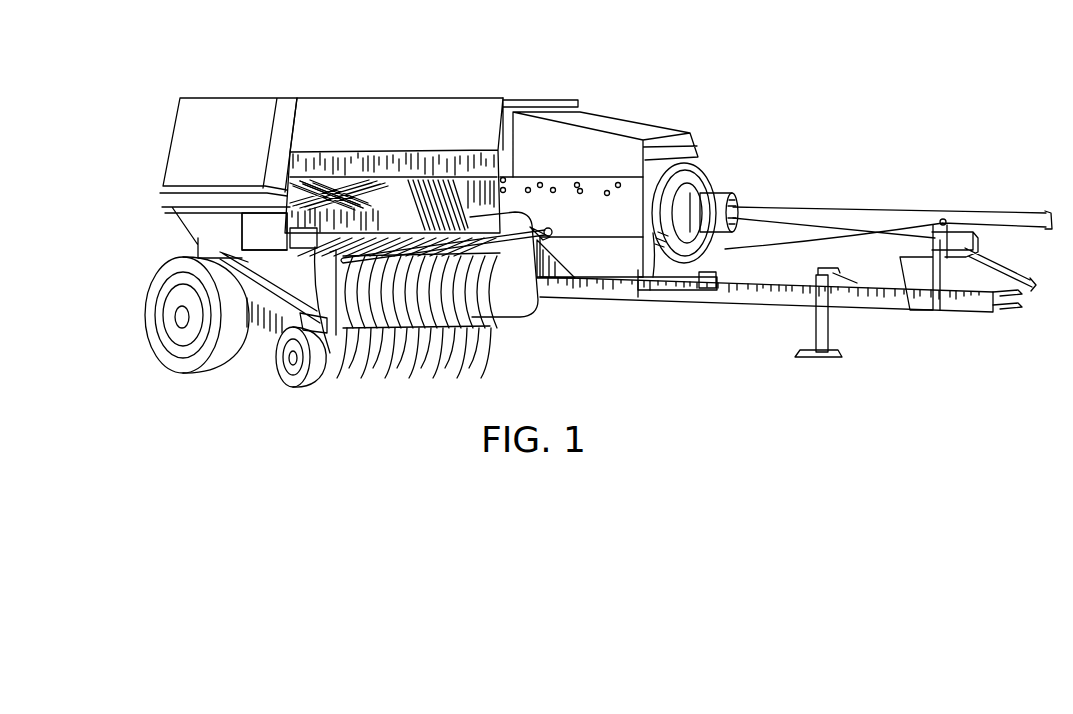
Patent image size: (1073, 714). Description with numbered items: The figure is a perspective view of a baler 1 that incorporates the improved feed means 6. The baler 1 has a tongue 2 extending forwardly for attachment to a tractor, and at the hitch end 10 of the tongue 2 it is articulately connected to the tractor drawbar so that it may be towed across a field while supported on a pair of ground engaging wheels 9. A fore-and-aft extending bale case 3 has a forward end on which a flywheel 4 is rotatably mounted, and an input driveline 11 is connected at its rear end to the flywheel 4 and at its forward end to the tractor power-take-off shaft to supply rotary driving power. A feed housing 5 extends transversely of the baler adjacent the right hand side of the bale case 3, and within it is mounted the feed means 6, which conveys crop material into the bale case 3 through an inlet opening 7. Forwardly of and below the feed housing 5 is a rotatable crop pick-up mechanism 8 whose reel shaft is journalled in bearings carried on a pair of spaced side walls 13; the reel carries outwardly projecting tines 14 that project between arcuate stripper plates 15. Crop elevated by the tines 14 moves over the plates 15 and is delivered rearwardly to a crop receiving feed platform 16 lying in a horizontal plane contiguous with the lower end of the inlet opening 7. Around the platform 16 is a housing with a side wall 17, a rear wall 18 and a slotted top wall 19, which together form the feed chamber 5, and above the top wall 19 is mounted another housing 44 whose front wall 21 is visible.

The baler 1 is at (532, 96).
The tongue 2 is at (758, 303).
The bale case 3 is at (647, 290).
The flywheel 4 is at (710, 187).
The feed housing 5 is at (387, 187).
The feed means 6 is at (285, 221).
The inlet opening 7 is at (480, 193).
The crop pick-up mechanism 8 is at (433, 341).
The ground engaging wheels 9 is at (223, 370).
The hitch end 10 is at (1010, 312).
The input driveline 11 is at (813, 220).
The side walls 13 is at (340, 340).
The tines 14 is at (483, 333).
The arcuate stripper plates 15 is at (400, 340).
The feed platform 16 is at (317, 247).
The side wall 17 is at (290, 242).
The rear wall 18 is at (412, 209).
The slotted top wall 19 is at (413, 177).
The front wall 21 is at (401, 140).
The housing 44 is at (415, 100).